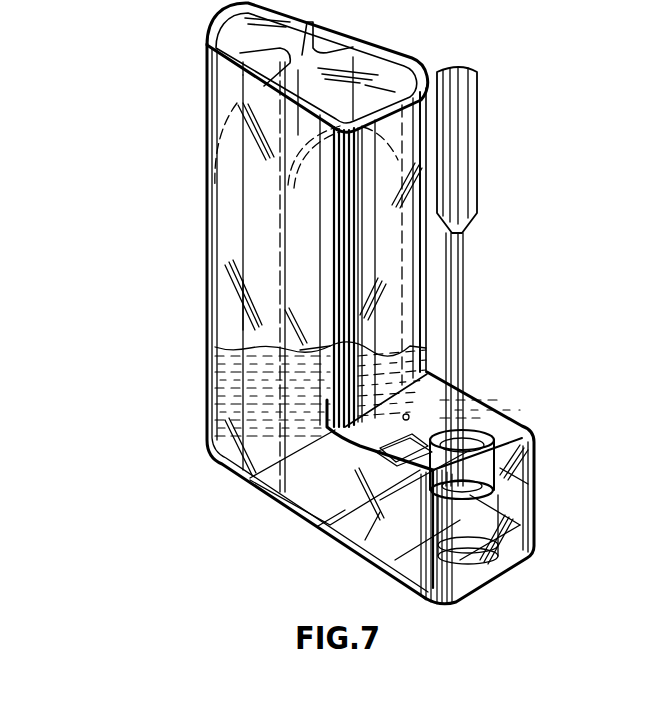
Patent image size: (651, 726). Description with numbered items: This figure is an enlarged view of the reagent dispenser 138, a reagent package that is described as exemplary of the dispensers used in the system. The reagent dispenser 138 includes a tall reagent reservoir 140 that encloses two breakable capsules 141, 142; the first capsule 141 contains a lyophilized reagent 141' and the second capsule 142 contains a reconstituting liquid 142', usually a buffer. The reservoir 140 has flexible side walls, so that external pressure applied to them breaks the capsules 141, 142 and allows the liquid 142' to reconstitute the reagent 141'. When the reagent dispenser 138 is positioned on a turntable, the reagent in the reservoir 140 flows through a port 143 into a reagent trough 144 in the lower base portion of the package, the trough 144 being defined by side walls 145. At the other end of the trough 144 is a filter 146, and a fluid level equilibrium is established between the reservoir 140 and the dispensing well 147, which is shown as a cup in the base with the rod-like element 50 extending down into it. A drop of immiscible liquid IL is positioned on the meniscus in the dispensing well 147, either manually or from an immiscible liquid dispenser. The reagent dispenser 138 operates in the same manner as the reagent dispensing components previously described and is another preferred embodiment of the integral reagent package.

The reagent dispenser 138 is at (122, 143).
The reagent reservoir 140 is at (353, 57).
The breakable capsule 141 is at (190, 38).
The lyophilized reagent 141' is at (191, 285).
The breakable capsule 142 is at (407, 60).
The reconstituting liquid 142' is at (288, 350).
The port 143 is at (330, 522).
The reagent trough 144 is at (378, 527).
The side walls 145 is at (420, 436).
The filter 146 is at (487, 540).
The dispensing well 147 is at (470, 440).
The aspirating probe 50 is at (524, 188).
The immiscible liquid IL is at (530, 485).